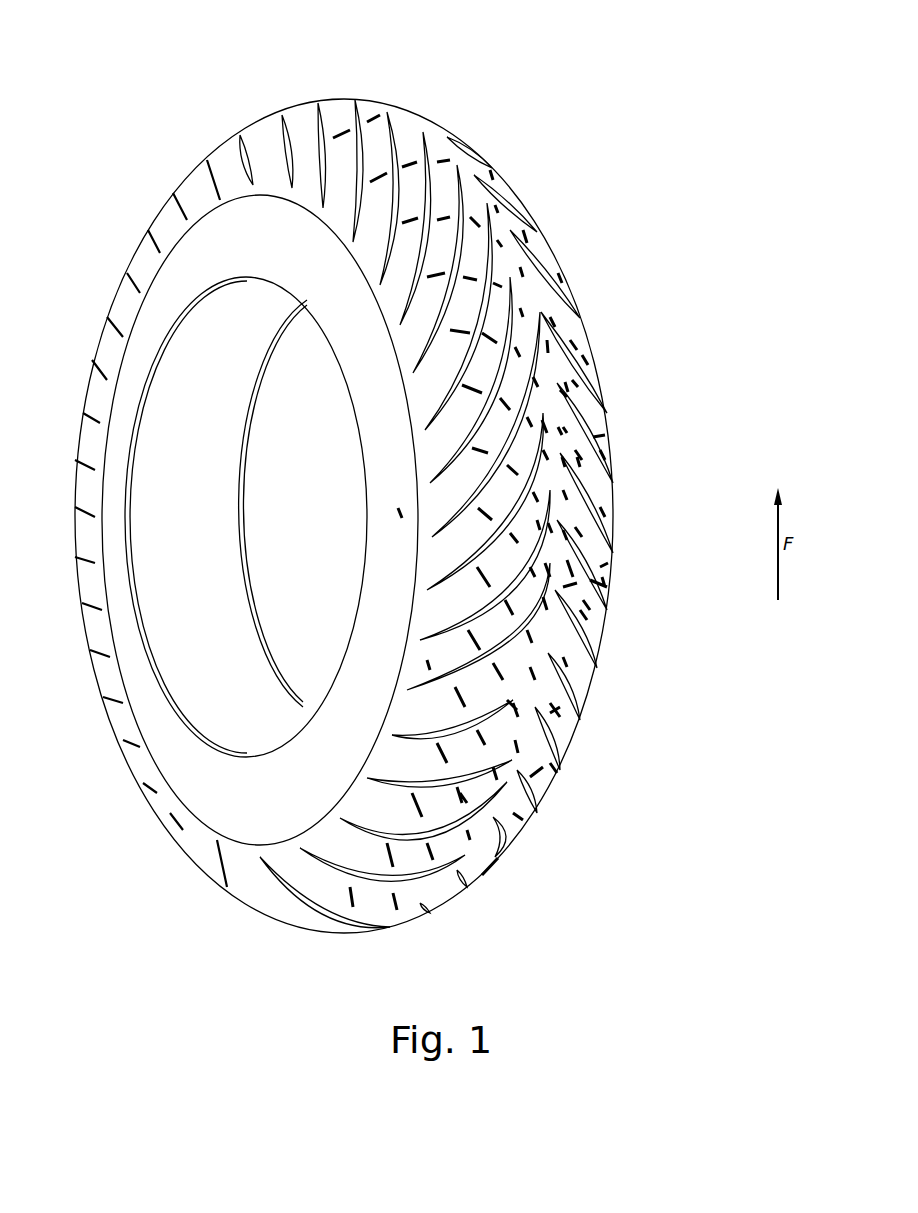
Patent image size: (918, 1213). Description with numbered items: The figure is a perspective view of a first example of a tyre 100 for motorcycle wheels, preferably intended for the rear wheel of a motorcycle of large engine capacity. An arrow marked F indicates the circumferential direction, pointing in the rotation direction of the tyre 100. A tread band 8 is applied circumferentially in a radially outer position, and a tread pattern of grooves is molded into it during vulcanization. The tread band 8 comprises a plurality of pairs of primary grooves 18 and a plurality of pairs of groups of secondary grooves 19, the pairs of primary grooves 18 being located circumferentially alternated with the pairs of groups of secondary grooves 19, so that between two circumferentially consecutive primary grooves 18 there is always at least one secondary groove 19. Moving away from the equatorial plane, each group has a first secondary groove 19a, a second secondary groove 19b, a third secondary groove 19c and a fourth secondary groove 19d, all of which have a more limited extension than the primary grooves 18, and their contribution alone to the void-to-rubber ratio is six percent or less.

The tyre 100 is at (560, 100).
The tread band 8 is at (563, 242).
The primary grooves 18 is at (572, 342).
The secondary grooves 19 is at (608, 511).
The first secondary groove 19a is at (545, 572).
The second secondary groove 19b is at (540, 525).
The third secondary groove 19c is at (517, 477).
The fourth secondary groove 19d is at (487, 444).